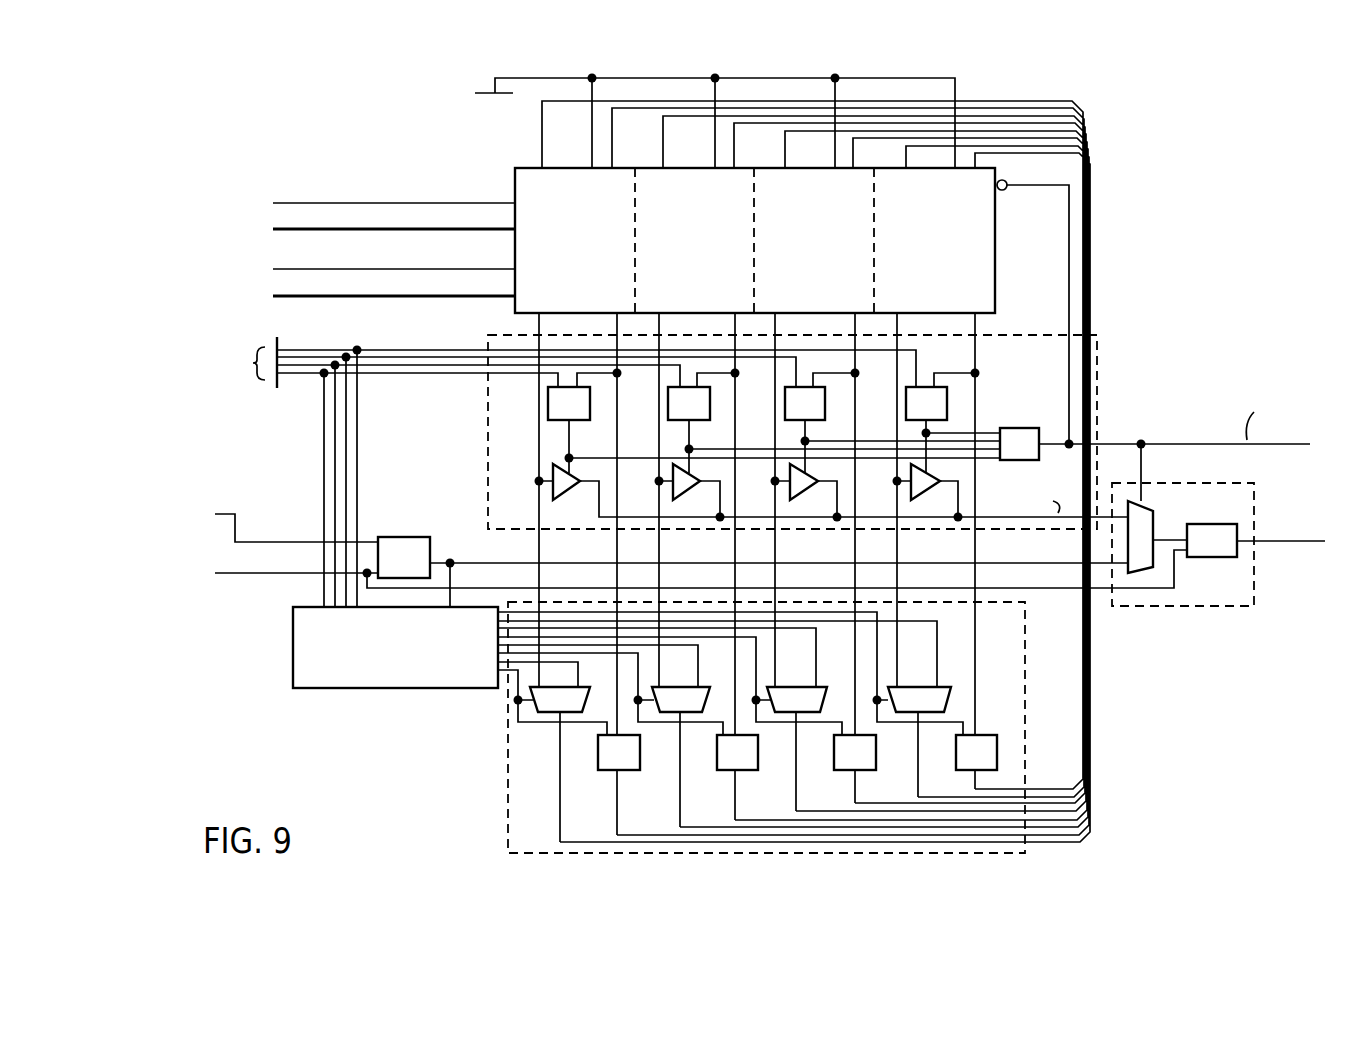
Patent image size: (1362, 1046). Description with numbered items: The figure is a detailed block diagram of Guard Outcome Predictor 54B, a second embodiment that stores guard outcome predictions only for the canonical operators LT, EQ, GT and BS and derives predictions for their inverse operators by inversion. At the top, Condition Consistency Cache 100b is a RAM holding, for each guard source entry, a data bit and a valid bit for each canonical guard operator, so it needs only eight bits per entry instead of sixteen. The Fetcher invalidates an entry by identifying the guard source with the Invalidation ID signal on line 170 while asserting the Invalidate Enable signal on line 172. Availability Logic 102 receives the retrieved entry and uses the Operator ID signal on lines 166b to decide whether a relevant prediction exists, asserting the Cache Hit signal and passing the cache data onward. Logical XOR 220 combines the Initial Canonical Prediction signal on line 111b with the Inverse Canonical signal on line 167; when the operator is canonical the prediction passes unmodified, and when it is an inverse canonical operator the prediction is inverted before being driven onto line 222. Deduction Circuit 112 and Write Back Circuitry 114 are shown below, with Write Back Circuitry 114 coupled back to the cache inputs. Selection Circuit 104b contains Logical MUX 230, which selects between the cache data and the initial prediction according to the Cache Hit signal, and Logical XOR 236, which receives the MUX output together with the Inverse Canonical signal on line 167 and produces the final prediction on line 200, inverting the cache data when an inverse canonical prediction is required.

The Guard Outcome Predictor 54B is at (219, 84).
The Invalidate Enable signal line 172 is at (350, 202).
The Invalidation ID signal line 170 is at (355, 232).
The Operator ID signal lines 166b is at (250, 350).
The Condition Consistency Cache 100b is at (578, 304).
The Availability Logic 102 is at (485, 421).
The Initial Canonical Prediction signal line 111b is at (305, 540).
The Logical XOR 220 is at (405, 535).
The initial prediction line 222 is at (467, 562).
The Inverse Canonical signal line 167 is at (262, 580).
The Deduction Circuit 112 is at (325, 692).
The Write Back Circuitry 114 is at (502, 778).
The Logical MUX 230 is at (1156, 509).
The Logical XOR 236 is at (1213, 560).
The final prediction line 200 is at (1290, 545).
The Selection Circuit 104b is at (1174, 616).